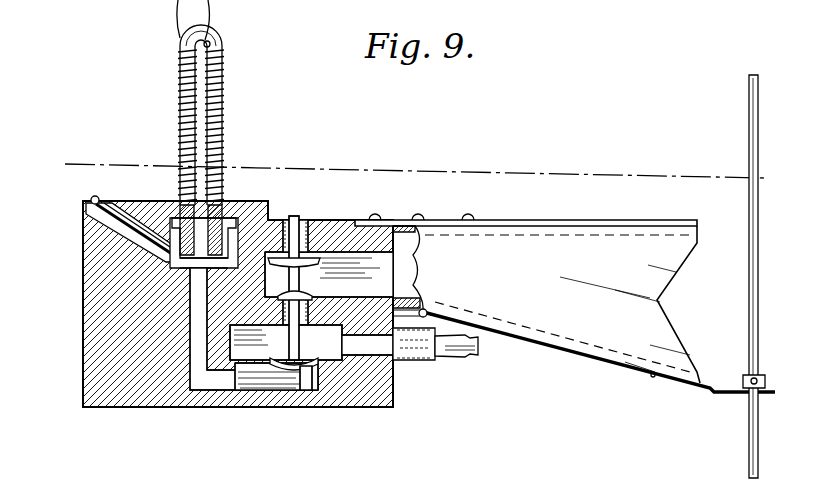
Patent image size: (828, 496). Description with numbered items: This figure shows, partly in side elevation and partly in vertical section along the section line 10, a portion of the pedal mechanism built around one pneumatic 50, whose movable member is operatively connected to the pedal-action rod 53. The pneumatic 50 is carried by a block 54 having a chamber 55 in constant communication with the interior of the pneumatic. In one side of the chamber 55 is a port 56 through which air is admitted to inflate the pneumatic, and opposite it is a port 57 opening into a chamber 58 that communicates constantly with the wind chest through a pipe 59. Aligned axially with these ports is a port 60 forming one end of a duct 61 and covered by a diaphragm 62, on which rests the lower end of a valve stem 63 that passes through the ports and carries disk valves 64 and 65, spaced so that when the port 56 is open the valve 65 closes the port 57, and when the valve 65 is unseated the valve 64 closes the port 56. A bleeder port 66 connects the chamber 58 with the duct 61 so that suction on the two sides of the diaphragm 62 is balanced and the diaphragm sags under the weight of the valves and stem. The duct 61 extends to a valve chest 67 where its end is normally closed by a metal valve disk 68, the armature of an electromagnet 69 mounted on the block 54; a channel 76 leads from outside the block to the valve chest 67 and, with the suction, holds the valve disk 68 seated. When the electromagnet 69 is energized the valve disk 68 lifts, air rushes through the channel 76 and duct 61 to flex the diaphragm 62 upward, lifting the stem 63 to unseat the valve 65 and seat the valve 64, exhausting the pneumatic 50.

The section line 10 is at (61, 152).
The pneumatic 50 is at (565, 303).
The pedal-action rod 53 is at (749, 338).
The block 54 is at (131, 406).
The chamber 55 is at (329, 274).
The port 56 is at (307, 222).
The port 57 is at (349, 343).
The chamber 58 is at (233, 385).
The pipe 59 is at (468, 353).
The port 60 is at (307, 370).
The duct 61 is at (264, 382).
The diaphragm 62 is at (293, 392).
The valve stem 63 is at (288, 341).
The disk valve 64 is at (291, 222).
The disk valve 65 is at (316, 294).
The bleeder port 66 is at (213, 373).
The valve chest 67 is at (178, 204).
The valve disk 68 is at (232, 214).
The electromagnet 69 is at (181, 102).
The channel 76 is at (125, 205).